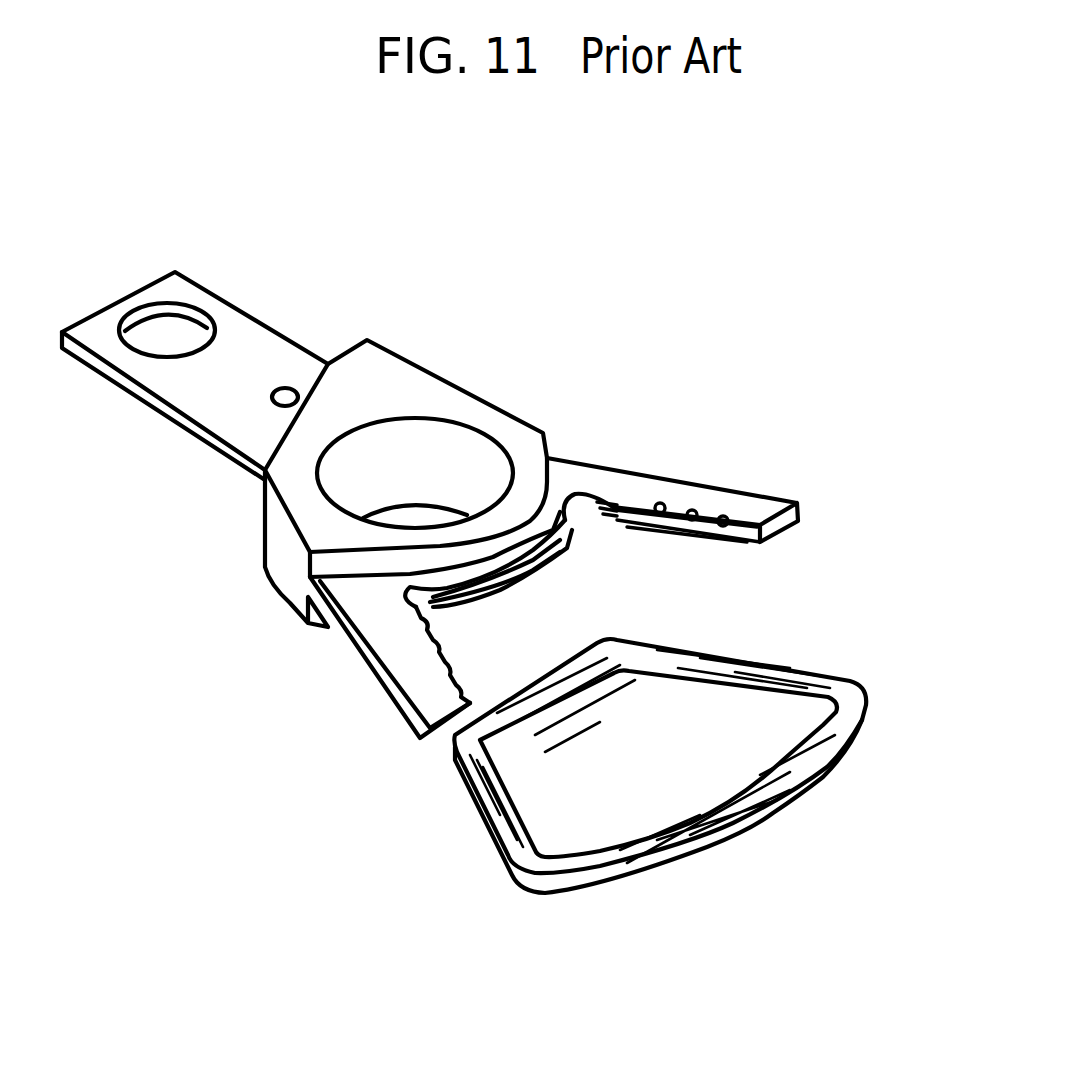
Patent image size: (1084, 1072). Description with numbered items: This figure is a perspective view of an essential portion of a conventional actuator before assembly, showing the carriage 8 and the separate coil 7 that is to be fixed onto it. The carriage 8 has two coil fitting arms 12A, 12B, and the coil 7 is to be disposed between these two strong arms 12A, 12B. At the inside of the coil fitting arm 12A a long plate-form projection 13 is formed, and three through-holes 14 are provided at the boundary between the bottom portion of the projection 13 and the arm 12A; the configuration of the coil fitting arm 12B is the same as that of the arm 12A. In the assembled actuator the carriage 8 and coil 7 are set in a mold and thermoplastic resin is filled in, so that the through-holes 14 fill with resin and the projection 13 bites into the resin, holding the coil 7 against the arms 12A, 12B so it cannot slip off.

The carriage 8 is at (420, 385).
The coil fitting arm 12A is at (627, 487).
The coil fitting arm 12B is at (382, 650).
The long plate-form projection 13 is at (717, 545).
The through-holes 14 is at (663, 503).
The coil 7 is at (853, 687).